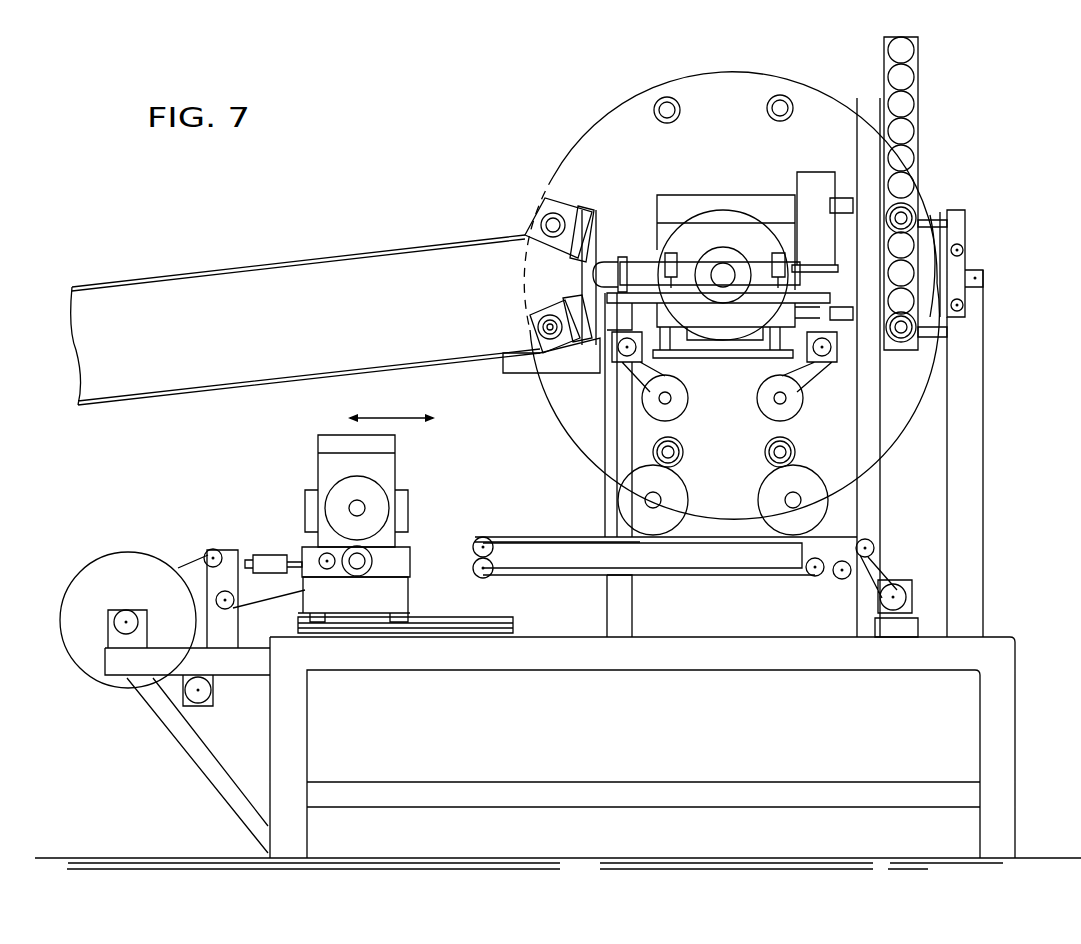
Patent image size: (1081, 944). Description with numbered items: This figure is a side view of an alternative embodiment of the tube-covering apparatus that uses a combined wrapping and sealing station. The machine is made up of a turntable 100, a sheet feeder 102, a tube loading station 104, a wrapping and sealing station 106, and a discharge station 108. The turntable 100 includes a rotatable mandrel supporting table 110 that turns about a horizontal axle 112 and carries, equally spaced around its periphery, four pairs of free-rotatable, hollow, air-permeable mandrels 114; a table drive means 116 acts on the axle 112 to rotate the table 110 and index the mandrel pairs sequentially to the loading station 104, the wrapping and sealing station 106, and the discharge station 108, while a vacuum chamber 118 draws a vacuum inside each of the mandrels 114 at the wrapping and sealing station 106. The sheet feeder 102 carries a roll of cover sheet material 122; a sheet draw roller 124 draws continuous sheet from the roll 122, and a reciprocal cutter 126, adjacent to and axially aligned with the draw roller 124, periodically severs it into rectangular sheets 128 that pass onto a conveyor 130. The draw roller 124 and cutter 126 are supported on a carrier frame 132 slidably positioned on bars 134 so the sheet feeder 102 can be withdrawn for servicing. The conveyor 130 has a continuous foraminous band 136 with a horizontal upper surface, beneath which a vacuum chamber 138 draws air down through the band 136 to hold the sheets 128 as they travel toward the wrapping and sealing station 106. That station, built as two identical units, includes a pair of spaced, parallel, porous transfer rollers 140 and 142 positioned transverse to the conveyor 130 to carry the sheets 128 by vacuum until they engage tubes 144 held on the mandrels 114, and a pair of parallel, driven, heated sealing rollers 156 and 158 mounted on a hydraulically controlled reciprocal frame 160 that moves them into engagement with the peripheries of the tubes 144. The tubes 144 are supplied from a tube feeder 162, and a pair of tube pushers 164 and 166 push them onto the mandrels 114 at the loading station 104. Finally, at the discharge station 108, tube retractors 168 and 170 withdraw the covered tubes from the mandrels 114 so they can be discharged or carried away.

The turntable 100 is at (557, 125).
The sheet feeder 102 is at (351, 562).
The tube loading station 104 is at (987, 249).
The wrapping and sealing station 106 is at (727, 452).
The discharge station 108 is at (335, 275).
The mandrel supporting table 110 is at (738, 144).
The horizontal axle 112 is at (722, 272).
The mandrels 114 is at (666, 97).
The table drive means 116 is at (752, 215).
The vacuum chamber 118 is at (938, 453).
The roll of cover sheet material 122 is at (118, 552).
The sheet draw roller 124 is at (330, 500).
The reciprocal cutter 126 is at (318, 555).
The rectangular sheets 128 is at (545, 537).
The conveyor 130 is at (758, 585).
The carrier frame 132 is at (370, 612).
The bars 134 is at (409, 608).
The foraminous band 136 is at (590, 537).
The vacuum chamber 138 is at (688, 562).
The transfer roller 140 is at (586, 465).
The transfer roller 142 is at (894, 367).
The tubes 144 is at (887, 82).
The sealing roller 156 is at (647, 400).
The sealing roller 158 is at (808, 398).
The reciprocal frame 160 is at (738, 332).
The tube feeder 162 is at (947, 207).
The tube pusher 164 is at (933, 230).
The tube pusher 166 is at (920, 327).
The tube retractor 168 is at (555, 197).
The tube retractor 170 is at (528, 300).